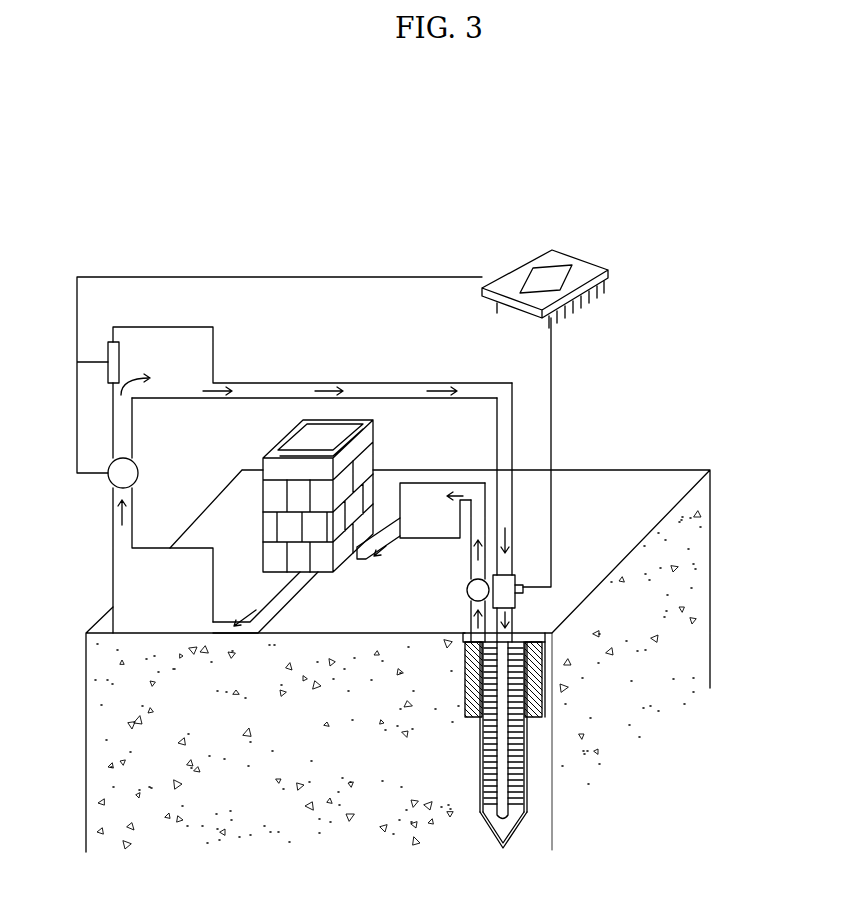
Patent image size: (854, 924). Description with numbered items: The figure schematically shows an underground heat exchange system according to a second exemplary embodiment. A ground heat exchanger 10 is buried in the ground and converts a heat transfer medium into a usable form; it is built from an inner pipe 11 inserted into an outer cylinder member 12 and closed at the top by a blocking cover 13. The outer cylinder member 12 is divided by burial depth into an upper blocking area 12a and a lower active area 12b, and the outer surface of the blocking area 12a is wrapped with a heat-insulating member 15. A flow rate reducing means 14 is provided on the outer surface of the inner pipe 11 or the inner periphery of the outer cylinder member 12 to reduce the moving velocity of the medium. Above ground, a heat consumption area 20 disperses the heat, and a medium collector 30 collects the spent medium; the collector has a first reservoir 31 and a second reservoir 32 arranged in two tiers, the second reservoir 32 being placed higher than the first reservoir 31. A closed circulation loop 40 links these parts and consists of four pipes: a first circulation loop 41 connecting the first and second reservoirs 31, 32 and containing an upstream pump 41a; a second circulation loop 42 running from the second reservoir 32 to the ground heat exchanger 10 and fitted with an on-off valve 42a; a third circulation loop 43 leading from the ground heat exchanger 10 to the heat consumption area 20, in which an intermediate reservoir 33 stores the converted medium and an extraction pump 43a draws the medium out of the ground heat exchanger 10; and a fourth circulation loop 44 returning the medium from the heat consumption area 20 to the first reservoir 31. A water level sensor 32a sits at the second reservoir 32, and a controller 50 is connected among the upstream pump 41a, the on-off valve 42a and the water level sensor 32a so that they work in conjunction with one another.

The ground heat exchanger 10 is at (575, 738).
The inner pipe 11 is at (527, 805).
The outer cylinder member 12 is at (718, 783).
The blocking area 12a is at (527, 705).
The active area 12b is at (527, 786).
The blocking cover 13 is at (528, 636).
The flow rate reducing means 14 is at (483, 797).
The heat-insulating member 15 is at (465, 683).
The heat consumption area 20 is at (271, 463).
The medium collector 30 is at (214, 219).
The first reservoir 31 is at (124, 595).
The second reservoir 32 is at (213, 355).
The water level sensor 32a is at (107, 357).
The intermediate reservoir 33 is at (428, 482).
The circulation loop 40 is at (364, 223).
The first circulation loop 41 is at (132, 430).
The upstream pump 41a is at (109, 481).
The second circulation loop 42 is at (360, 383).
The on-off valve 42a is at (523, 588).
The third circulation loop 43 is at (470, 559).
The extraction pump 43a is at (468, 588).
The fourth circulation loop 44 is at (287, 596).
The controller 50 is at (580, 262).